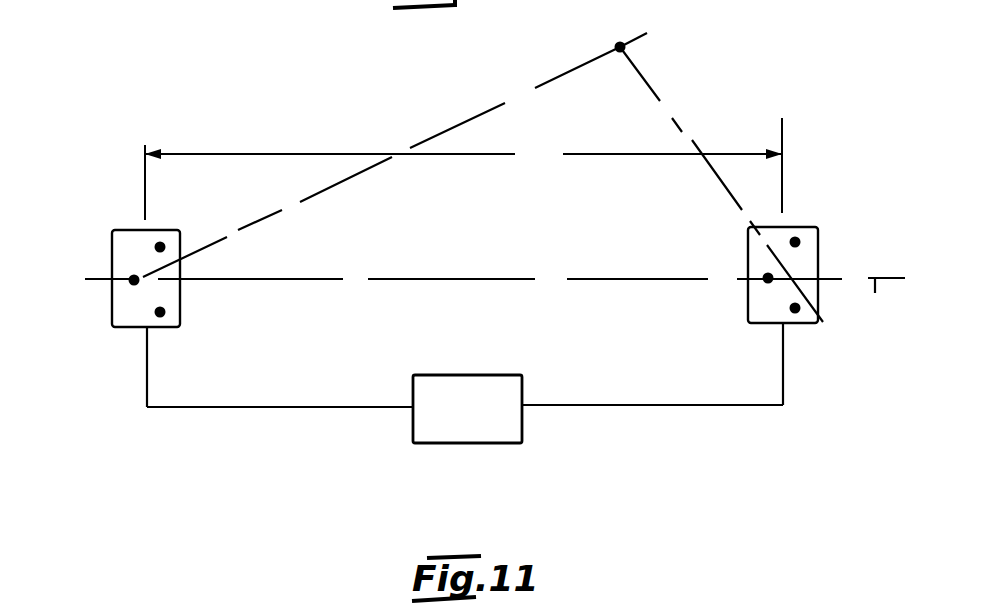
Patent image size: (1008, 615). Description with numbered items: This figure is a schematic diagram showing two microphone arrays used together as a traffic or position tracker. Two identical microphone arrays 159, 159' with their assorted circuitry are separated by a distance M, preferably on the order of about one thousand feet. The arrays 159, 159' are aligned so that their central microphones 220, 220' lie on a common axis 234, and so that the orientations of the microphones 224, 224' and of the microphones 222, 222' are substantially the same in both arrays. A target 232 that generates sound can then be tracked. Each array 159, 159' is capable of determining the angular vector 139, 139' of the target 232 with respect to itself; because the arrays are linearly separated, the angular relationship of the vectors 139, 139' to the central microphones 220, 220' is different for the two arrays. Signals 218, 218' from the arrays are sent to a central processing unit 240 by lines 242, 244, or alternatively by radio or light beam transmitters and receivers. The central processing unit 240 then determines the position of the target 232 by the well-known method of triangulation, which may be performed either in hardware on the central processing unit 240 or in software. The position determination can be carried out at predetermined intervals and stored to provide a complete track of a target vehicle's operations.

The angular vector 139 is at (381, 162).
The angular vector 139' is at (721, 177).
The microphone array 159 is at (123, 258).
The microphone array 159' is at (809, 251).
The signal 218 is at (106, 367).
The signal 218' is at (833, 365).
The central microphone 220 is at (90, 296).
The central microphone 220' is at (723, 296).
The microphone 222 is at (186, 223).
The microphone 222' is at (846, 235).
The microphone 224 is at (188, 337).
The microphone 224' is at (834, 338).
The target 232 is at (623, 43).
The common axis 234 is at (881, 303).
The central processing unit 240 is at (460, 445).
The line 242 is at (310, 409).
The line 244 is at (593, 407).
The distance M is at (463, 169).